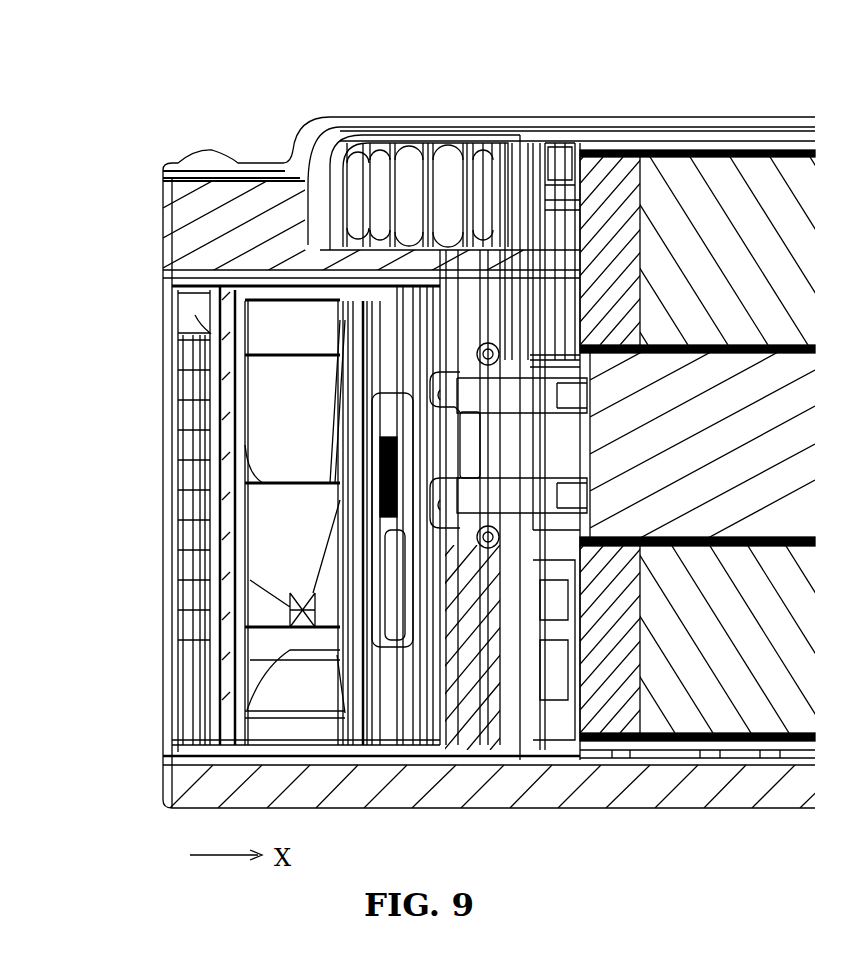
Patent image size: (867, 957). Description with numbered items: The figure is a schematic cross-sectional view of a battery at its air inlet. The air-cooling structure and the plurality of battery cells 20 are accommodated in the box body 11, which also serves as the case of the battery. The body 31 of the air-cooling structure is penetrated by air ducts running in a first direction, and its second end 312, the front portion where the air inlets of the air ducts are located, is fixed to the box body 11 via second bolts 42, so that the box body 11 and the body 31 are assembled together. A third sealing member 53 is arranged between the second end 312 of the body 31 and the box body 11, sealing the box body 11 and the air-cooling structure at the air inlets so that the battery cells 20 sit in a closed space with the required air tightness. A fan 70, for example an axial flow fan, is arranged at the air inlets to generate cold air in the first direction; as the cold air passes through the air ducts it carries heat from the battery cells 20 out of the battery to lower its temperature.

The battery cells 20 is at (668, 177).
The body 31 is at (795, 380).
The box body 11 is at (655, 792).
The fan 70 is at (290, 653).
The second end 312 is at (500, 446).
The second bolts 42 is at (450, 400).
The third sealing member 53 is at (478, 352).